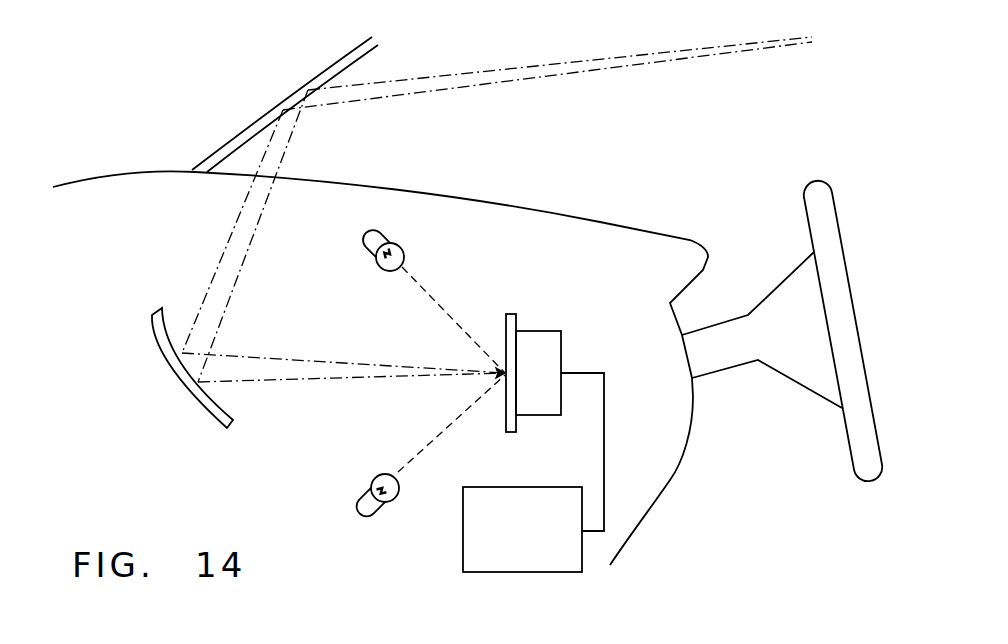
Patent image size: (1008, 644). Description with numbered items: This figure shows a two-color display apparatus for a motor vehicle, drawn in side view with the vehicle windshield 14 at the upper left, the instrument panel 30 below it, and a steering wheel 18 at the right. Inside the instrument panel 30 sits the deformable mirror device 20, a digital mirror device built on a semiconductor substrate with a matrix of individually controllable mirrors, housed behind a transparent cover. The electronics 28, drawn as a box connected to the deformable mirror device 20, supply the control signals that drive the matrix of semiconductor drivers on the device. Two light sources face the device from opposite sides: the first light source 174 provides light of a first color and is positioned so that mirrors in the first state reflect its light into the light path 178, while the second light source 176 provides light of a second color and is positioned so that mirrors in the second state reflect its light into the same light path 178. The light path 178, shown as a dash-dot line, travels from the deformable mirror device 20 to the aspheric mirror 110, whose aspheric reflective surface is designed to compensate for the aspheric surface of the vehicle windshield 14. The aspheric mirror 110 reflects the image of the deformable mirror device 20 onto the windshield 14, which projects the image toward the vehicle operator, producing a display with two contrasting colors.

The vehicle windshield 14 is at (247, 128).
The steering wheel 18 is at (835, 278).
The deformable mirror device 20 is at (547, 337).
The electronics 28 is at (488, 562).
The instrument panel 30 is at (657, 480).
The aspheric mirror 110 is at (177, 365).
The first light source 174 is at (378, 232).
The second light source 176 is at (370, 500).
The light path 178 is at (317, 365).